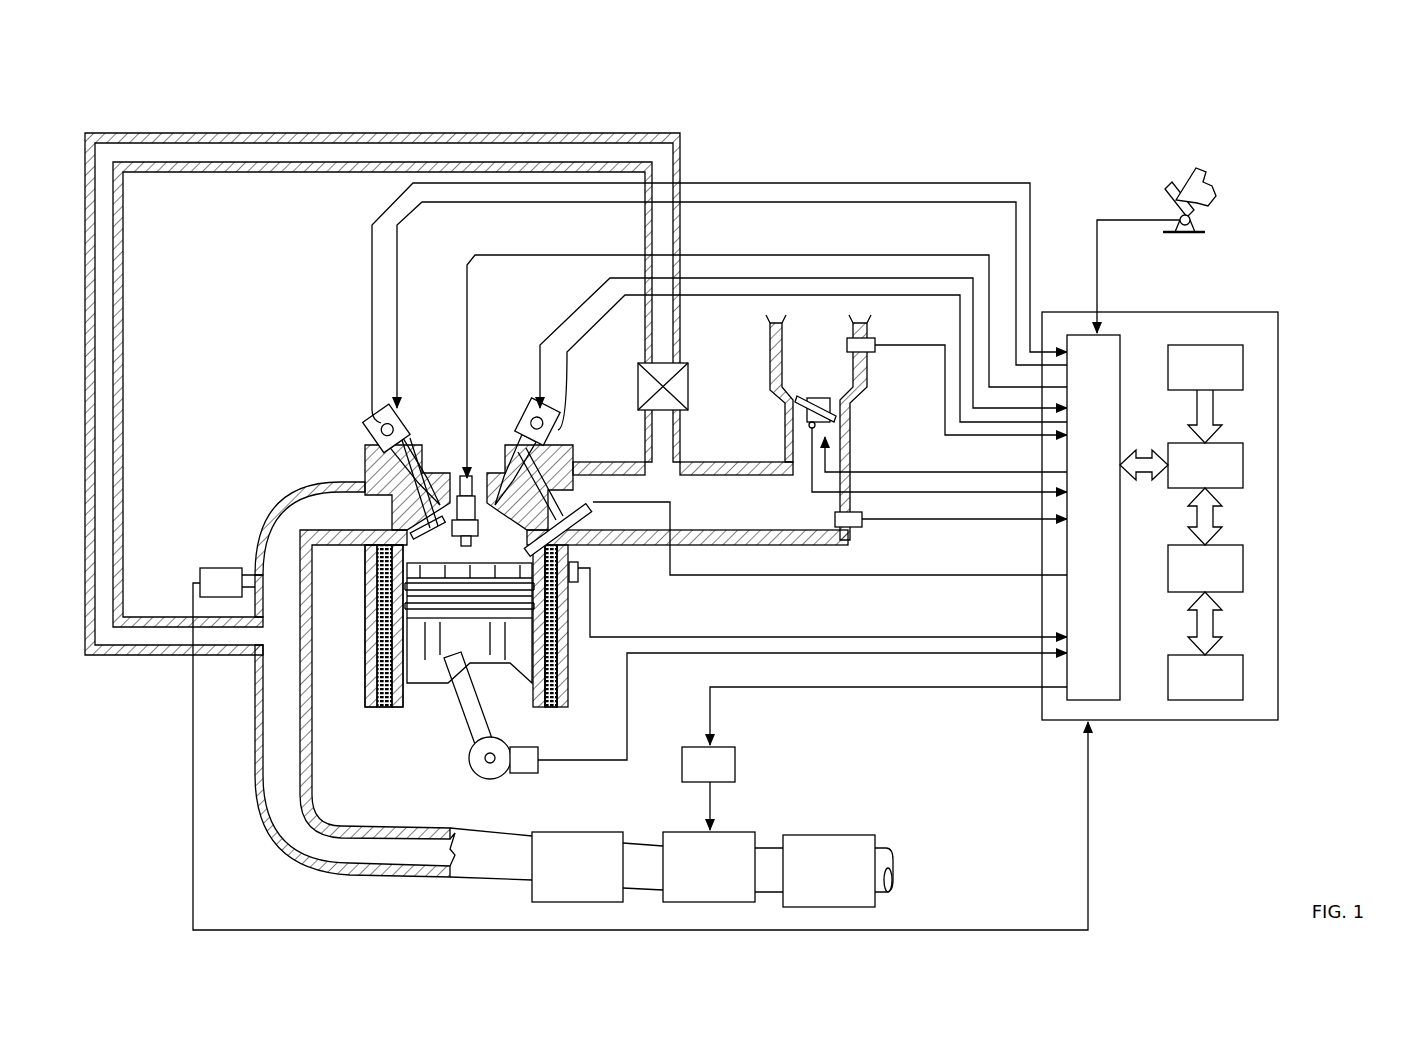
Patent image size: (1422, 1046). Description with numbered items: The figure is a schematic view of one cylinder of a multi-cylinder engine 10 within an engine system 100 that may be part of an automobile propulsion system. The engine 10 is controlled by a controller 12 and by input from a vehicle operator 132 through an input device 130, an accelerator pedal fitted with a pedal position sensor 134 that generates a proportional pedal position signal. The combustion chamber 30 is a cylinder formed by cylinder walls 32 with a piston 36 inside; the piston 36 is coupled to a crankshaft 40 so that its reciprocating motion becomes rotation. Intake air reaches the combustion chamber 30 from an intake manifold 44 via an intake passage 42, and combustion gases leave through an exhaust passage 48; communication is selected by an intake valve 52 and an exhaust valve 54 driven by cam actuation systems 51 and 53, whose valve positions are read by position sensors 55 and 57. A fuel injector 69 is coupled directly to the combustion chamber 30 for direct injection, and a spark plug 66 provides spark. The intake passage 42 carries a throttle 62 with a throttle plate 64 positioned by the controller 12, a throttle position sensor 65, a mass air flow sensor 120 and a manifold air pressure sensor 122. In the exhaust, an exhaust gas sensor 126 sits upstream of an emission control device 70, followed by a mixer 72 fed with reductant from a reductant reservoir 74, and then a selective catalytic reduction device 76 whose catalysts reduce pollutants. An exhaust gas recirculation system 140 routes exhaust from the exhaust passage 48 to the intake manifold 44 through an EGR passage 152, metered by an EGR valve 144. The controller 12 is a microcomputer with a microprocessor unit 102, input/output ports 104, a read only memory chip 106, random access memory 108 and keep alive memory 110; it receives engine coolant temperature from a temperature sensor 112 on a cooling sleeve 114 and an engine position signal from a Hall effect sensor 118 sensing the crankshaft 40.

The engine system 100 is at (1312, 104).
The engine 10 is at (296, 396).
The controller 12 is at (1278, 315).
The combustion chamber 30 is at (378, 640).
The cylinder walls 32 is at (400, 718).
The piston 36 is at (453, 655).
The crankshaft 40 is at (480, 775).
The intake passage 42 is at (818, 427).
The intake manifold 44 is at (745, 503).
The exhaust passage 48 is at (393, 681).
The cam actuation system 51 is at (520, 410).
The intake valve 52 is at (792, 511).
The cam actuation system 53 is at (408, 410).
The exhaust valve 54 is at (405, 518).
The position sensor 55 is at (555, 440).
The position sensor 57 is at (378, 432).
The throttle 62 is at (842, 404).
The throttle plate 64 is at (798, 404).
The throttle position sensor 65 is at (810, 427).
The spark plug 66 is at (470, 476).
The fuel injector 69 is at (578, 547).
The emission control device 70 is at (597, 867).
The mixer 72 is at (723, 867).
The reductant reservoir 74 is at (874, 758).
The selective catalytic reduction device 76 is at (838, 871).
The microprocessor unit 102 is at (1243, 465).
The input/output ports 104 is at (1122, 345).
The read only memory chip 106 is at (1243, 365).
The random access memory 108 is at (1243, 568).
The keep alive memory 110 is at (1243, 678).
The temperature sensor 112 is at (585, 580).
The cooling sleeve 114 is at (560, 668).
The Hall effect sensor 118 is at (528, 772).
The mass air flow sensor 120 is at (872, 340).
The manifold air pressure sensor 122 is at (858, 527).
The exhaust gas sensor 126 is at (200, 572).
The input device 130 is at (1165, 192).
The vehicle operator 132 is at (1218, 182).
The pedal position sensor 134 is at (1198, 225).
The exhaust gas recirculation system 140 is at (538, 116).
The EGR valve 144 is at (688, 400).
The EGR passage 152 is at (380, 133).